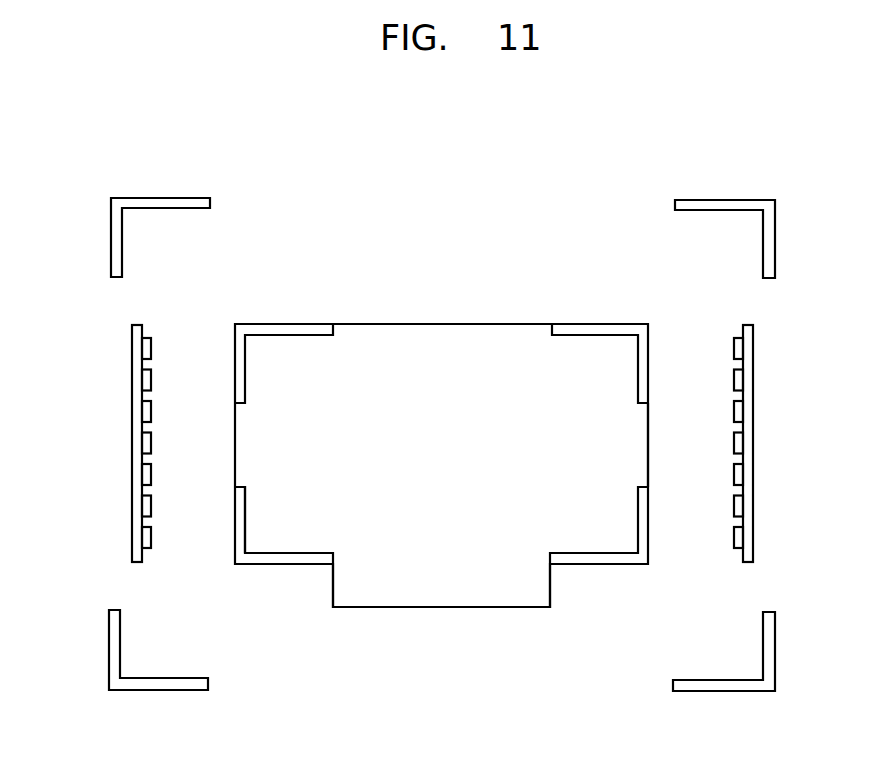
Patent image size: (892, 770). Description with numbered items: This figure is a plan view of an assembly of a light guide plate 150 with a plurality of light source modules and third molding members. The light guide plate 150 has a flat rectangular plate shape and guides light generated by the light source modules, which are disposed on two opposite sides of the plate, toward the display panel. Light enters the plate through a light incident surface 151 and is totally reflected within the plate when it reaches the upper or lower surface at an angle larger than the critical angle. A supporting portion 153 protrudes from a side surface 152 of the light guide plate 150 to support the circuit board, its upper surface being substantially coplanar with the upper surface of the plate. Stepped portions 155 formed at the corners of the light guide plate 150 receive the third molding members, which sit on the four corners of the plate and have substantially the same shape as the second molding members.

The light guide plate 150 is at (433, 333).
The light incident surface 151 is at (650, 438).
The side surface 152 is at (612, 565).
The supporting portion 153 is at (436, 607).
The stepped portion 155 is at (240, 510).